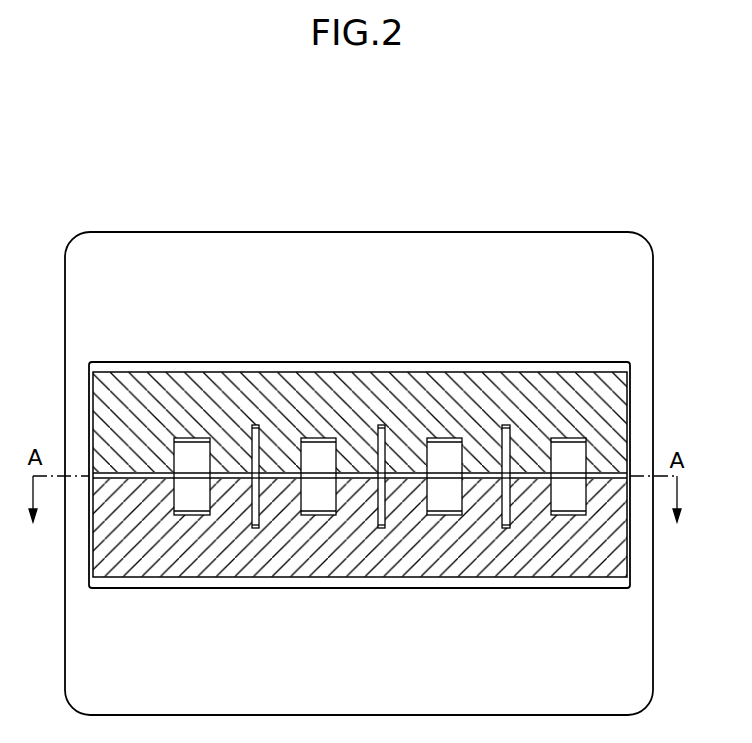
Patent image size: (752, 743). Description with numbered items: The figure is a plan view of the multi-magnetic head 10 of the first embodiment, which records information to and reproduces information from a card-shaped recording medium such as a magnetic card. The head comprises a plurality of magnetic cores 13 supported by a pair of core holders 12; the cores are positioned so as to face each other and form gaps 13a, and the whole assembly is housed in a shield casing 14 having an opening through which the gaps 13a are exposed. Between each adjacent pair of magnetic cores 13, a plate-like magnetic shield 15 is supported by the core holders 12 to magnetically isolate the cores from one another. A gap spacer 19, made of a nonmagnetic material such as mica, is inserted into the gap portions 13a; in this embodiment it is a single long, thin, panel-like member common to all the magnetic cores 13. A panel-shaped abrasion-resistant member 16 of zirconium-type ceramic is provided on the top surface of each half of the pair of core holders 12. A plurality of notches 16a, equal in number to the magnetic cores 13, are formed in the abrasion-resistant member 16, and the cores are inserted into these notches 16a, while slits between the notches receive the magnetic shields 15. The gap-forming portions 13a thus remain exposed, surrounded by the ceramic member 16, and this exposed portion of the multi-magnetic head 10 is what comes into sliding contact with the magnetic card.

The multi-magnetic head 10 is at (381, 417).
The core holders 12 is at (611, 367).
The magnetic cores 13 is at (447, 452).
The gaps 13a is at (317, 502).
The shield casing 14 is at (612, 672).
The magnetic shield 15 is at (507, 428).
The abrasion-resistant member 16 is at (112, 383).
The notches 16a is at (342, 495).
The gap spacer 19 is at (568, 474).